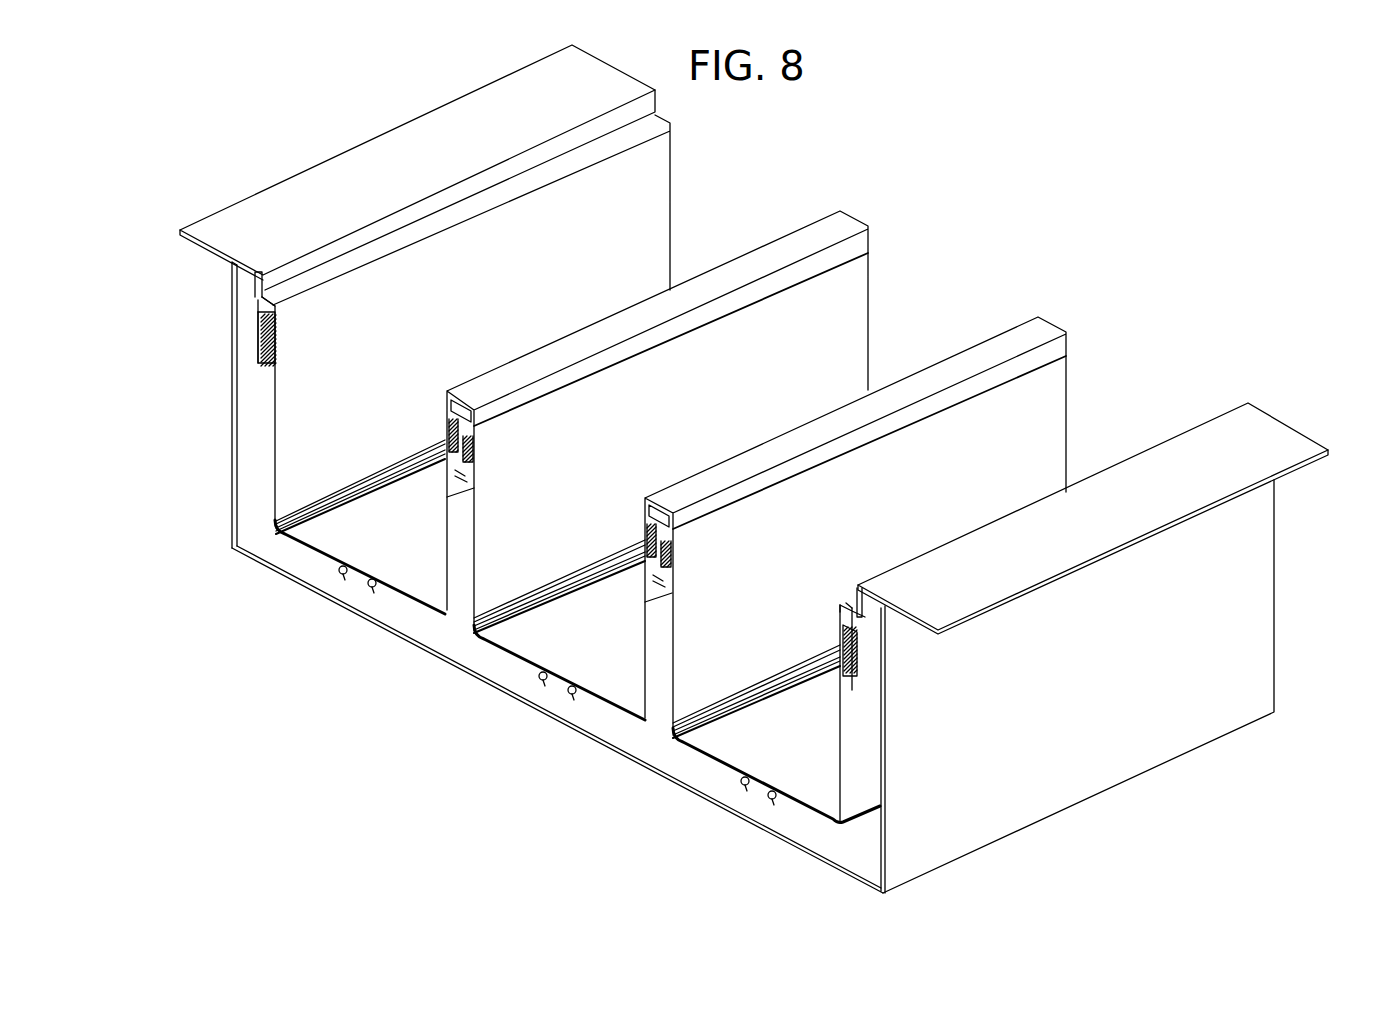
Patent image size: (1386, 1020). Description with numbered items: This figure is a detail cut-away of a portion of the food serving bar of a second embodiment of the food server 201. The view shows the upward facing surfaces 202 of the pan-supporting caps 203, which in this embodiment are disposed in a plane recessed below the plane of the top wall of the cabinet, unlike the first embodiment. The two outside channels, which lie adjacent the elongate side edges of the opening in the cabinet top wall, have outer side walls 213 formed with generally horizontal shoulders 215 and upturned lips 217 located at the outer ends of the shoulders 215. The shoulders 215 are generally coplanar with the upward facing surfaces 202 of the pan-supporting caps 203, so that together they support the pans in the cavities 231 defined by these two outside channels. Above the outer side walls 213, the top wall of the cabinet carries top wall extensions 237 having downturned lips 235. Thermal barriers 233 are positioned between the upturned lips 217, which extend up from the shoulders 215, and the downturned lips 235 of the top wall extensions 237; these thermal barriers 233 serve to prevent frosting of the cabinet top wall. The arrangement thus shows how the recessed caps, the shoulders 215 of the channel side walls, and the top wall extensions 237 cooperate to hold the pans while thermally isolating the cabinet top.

The food server 201 is at (1176, 222).
The upward facing surfaces 202 is at (818, 221).
The pan-supporting caps 203 is at (866, 244).
The outer side walls 213 is at (270, 505).
The shoulders 215 is at (648, 120).
The upturned lips 217 is at (256, 282).
The cavities 231 is at (311, 445).
The thermal barriers 233 is at (258, 283).
The downturned lips 235 is at (267, 296).
The top wall extensions 237 is at (468, 113).